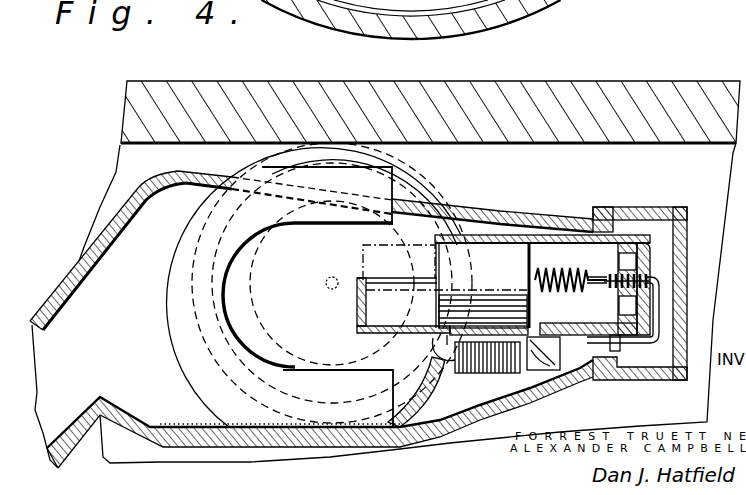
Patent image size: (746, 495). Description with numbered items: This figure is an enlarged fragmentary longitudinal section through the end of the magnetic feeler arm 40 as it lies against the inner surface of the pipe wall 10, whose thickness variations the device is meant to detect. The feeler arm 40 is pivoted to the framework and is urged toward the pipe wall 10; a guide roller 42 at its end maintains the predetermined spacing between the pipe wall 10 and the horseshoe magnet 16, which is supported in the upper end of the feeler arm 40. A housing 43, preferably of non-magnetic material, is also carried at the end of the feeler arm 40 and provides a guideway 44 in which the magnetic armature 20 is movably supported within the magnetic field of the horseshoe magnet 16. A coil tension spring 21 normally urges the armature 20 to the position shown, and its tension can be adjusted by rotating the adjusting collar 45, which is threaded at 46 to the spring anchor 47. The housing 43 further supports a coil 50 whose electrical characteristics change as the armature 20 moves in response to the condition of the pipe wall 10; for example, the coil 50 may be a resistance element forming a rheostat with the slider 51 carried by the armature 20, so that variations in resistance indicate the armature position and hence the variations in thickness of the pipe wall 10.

The pipe wall 10 is at (590, 134).
The horseshoe magnet 16 is at (190, 355).
The armature 20 is at (530, 304).
The coil tension spring 21 is at (585, 260).
The feeler arm 40 is at (72, 452).
The guide roller 42 is at (425, 186).
The housing 43 is at (357, 308).
The guideway 44 is at (403, 302).
The adjusting collar 45 is at (641, 228).
The threads 46 is at (652, 277).
The spring anchor 47 is at (602, 288).
The coil 50 is at (480, 370).
The slider 51 is at (543, 362).